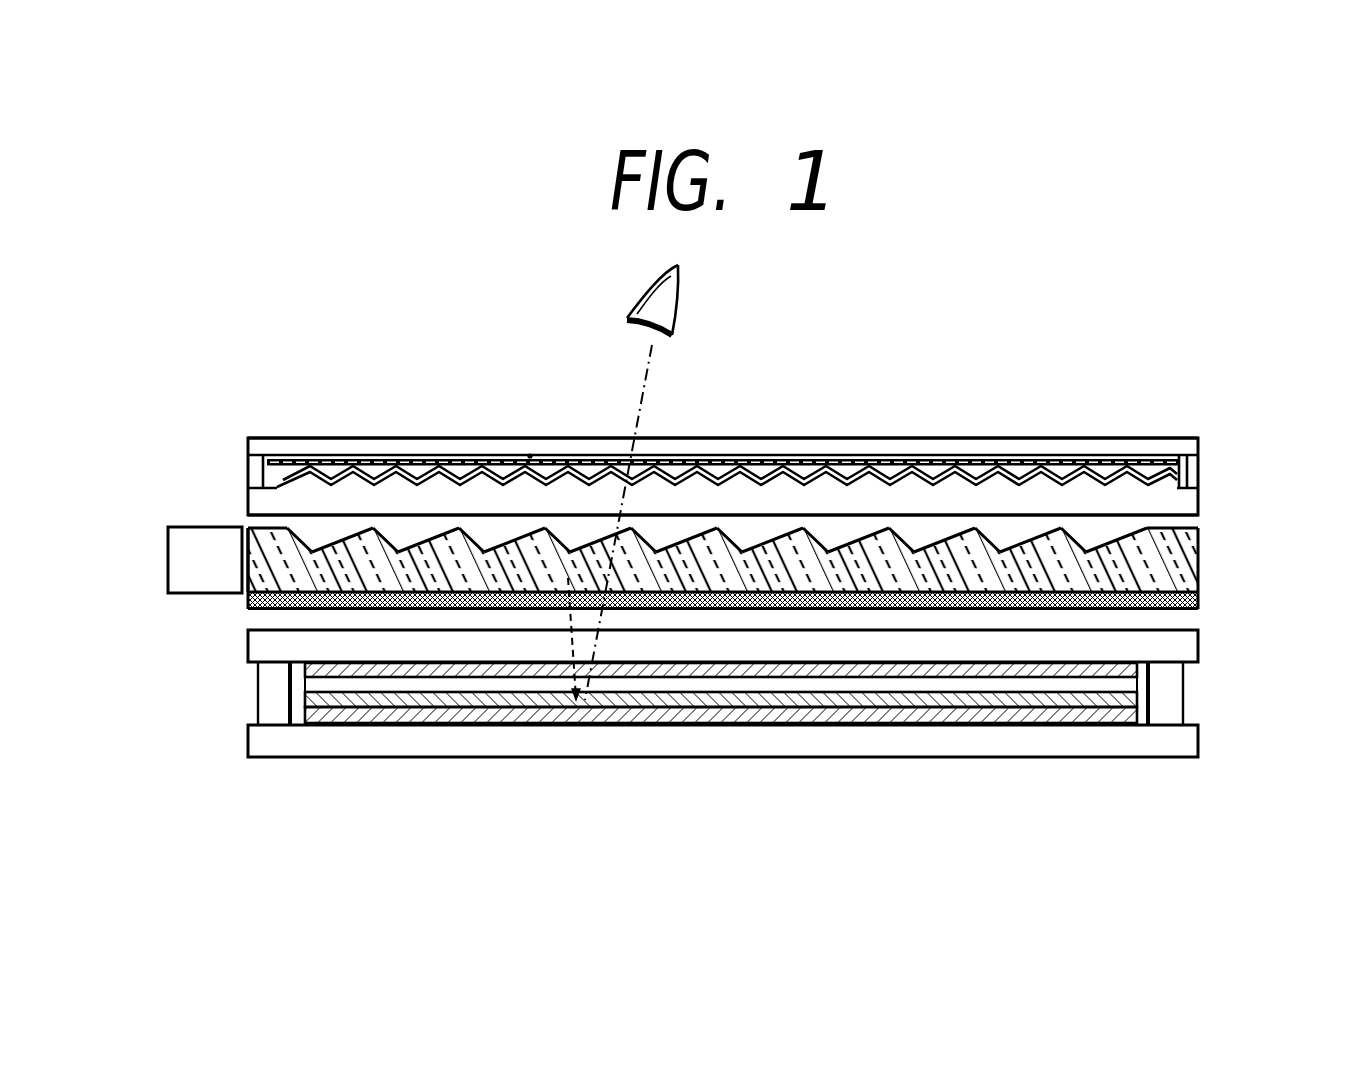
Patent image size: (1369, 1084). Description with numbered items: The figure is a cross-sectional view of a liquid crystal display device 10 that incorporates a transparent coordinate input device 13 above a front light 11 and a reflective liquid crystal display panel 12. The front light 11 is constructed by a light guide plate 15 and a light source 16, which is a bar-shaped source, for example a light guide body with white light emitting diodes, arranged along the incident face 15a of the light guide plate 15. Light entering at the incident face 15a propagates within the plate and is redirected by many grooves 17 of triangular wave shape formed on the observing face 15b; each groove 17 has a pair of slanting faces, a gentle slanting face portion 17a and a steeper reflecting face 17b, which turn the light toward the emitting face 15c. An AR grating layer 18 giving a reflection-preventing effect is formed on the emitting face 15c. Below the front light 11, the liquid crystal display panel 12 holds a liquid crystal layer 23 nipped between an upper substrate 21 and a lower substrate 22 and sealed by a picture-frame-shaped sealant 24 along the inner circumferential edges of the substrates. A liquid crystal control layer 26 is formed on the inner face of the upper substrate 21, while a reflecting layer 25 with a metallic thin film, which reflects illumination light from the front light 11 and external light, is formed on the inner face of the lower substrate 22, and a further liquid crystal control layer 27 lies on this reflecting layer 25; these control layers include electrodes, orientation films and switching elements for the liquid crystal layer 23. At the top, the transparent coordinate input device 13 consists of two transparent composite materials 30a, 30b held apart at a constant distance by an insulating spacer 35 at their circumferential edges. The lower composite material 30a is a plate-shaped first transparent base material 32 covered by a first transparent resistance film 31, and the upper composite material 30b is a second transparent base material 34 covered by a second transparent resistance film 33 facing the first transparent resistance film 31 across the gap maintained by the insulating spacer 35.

The liquid crystal display device 10 is at (1099, 363).
The front light 11 is at (1209, 566).
The liquid crystal display panel 12 is at (1211, 645).
The transparent coordinate input device 13 is at (1205, 461).
The light guide plate 15 is at (1186, 550).
The incident face 15a is at (247, 552).
The observing face 15b is at (1025, 538).
The emitting face 15c is at (268, 610).
The light source 16 is at (183, 566).
The grooves 17 is at (957, 335).
The gentle slanting face portion 17a is at (952, 547).
The reflecting face 17b is at (905, 547).
The AR grating layer 18 is at (1200, 596).
The upper substrate 21 is at (1187, 648).
The lower substrate 22 is at (1138, 740).
The liquid crystal layer 23 is at (303, 682).
The sealant 24 is at (277, 712).
The reflecting layer 25 is at (740, 717).
The liquid crystal control layer 26 is at (1013, 668).
The liquid crystal control layer 27 is at (887, 700).
The transparent composite material 30a is at (530, 455).
The transparent composite material 30b is at (728, 440).
The first transparent resistance film 31 is at (447, 462).
The first transparent base material 32 is at (1186, 503).
The second transparent resistance film 33 is at (374, 456).
The second transparent base material 34 is at (295, 445).
The insulating spacer 35 is at (249, 467).